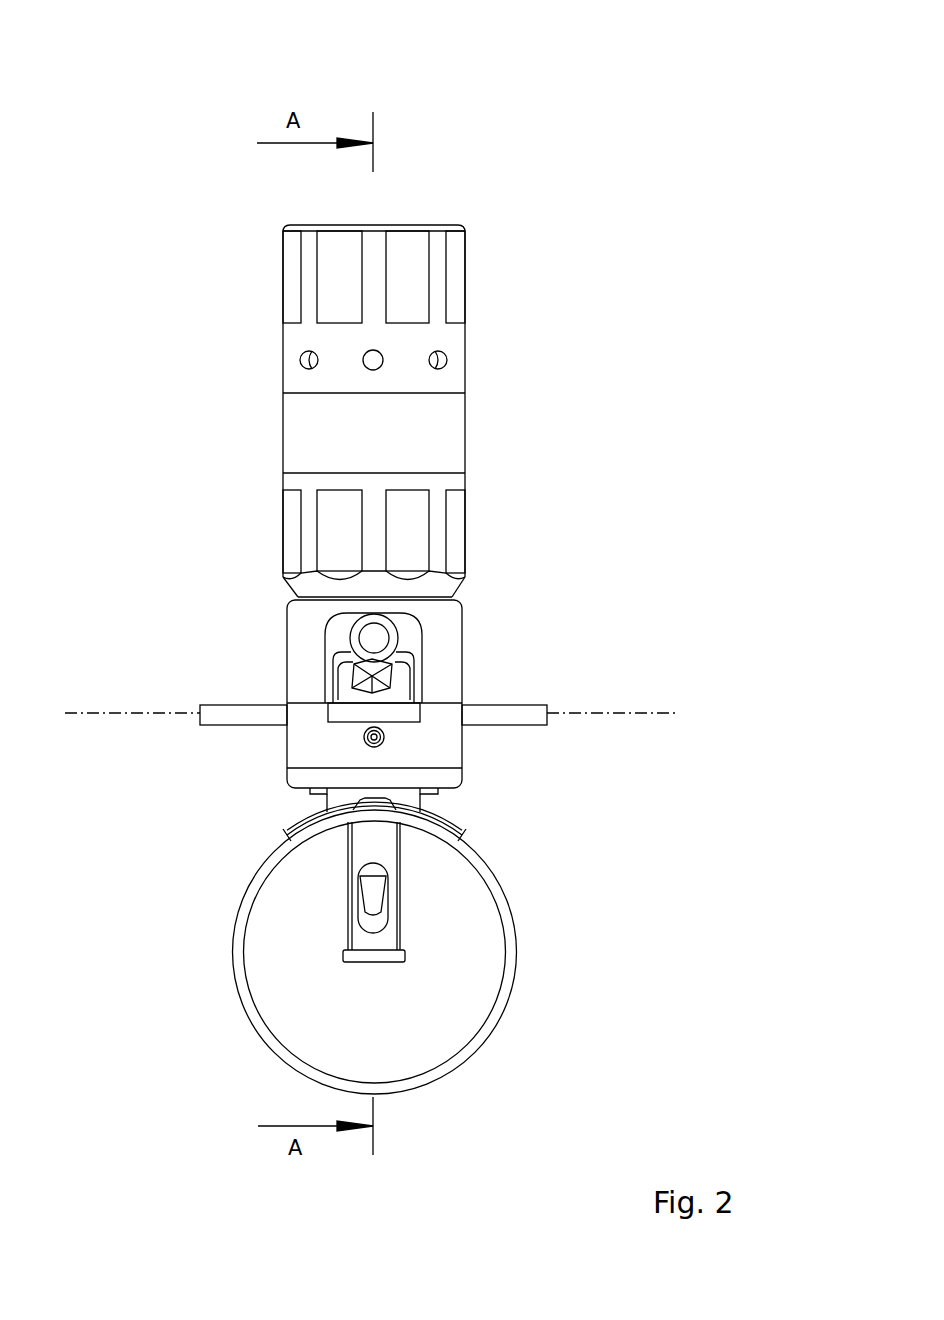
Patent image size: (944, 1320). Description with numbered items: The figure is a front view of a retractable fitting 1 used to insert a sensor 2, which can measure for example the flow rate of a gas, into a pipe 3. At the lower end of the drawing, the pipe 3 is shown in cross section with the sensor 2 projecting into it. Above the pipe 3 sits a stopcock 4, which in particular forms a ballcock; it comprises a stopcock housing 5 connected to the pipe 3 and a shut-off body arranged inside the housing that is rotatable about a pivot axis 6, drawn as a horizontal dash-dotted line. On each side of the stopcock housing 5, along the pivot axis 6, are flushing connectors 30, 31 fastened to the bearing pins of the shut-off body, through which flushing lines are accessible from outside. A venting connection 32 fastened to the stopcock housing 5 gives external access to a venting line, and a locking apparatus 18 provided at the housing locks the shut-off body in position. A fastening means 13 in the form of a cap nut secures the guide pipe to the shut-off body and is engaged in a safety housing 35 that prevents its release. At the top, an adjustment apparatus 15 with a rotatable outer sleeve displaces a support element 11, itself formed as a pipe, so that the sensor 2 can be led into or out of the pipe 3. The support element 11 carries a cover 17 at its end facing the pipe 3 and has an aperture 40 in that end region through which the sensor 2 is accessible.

The retractable fitting 1 is at (150, 95).
The sensor 2 is at (383, 912).
The pipe 3 is at (470, 1048).
The stopcock 4 is at (272, 740).
The stopcock housing 5 is at (455, 750).
The pivot axis 6 is at (622, 713).
The support element 11 is at (360, 843).
The fastening means 13 is at (440, 638).
The adjustment apparatus 15 is at (483, 423).
The cover 17 is at (357, 962).
The locking apparatus 18 is at (330, 637).
The flushing connector 30 is at (218, 708).
The flushing connector 31 is at (517, 706).
The venting connection 32 is at (362, 736).
The safety housing 35 is at (453, 608).
The aperture 40 is at (377, 913).